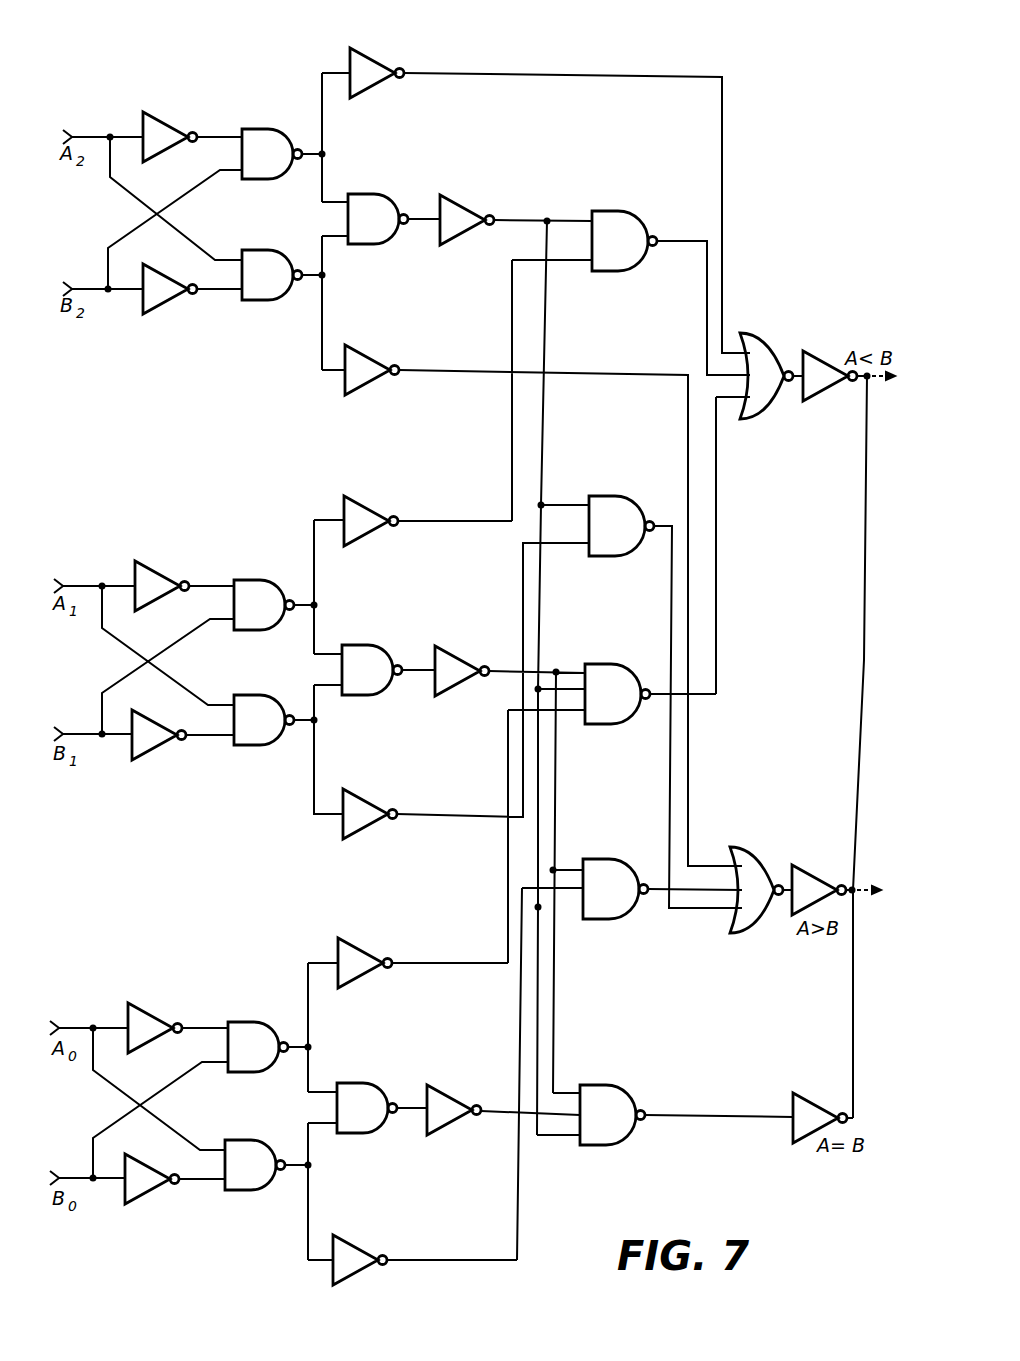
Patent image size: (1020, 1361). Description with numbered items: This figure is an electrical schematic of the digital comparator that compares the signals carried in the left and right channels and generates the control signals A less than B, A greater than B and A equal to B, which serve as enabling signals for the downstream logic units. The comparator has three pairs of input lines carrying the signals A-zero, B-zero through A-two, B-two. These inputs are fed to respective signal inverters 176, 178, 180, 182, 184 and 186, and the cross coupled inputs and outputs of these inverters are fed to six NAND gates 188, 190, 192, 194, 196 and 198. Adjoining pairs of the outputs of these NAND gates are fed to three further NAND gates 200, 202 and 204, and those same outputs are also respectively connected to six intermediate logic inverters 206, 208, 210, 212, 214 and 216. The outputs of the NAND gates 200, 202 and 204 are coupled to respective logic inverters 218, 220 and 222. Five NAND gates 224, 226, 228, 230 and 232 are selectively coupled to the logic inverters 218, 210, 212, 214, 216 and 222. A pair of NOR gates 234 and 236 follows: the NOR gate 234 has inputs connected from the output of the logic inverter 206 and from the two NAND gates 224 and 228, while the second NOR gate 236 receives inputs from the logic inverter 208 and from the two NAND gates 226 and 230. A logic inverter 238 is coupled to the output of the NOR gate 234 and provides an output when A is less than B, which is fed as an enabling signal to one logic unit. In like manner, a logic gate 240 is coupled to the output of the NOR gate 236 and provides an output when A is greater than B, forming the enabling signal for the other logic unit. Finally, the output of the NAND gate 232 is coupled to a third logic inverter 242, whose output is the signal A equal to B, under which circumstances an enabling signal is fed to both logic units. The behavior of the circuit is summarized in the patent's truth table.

The signal inverter 176 is at (142, 1205).
The signal inverter 178 is at (152, 1008).
The signal inverter 180 is at (141, 763).
The signal inverter 182 is at (158, 540).
The signal inverter 184 is at (155, 312).
The signal inverter 186 is at (157, 117).
The NAND gate 188 is at (253, 130).
The NAND gate 190 is at (252, 252).
The NAND gate 192 is at (245, 580).
The NAND gate 194 is at (240, 738).
The NAND gate 196 is at (250, 1022).
The NAND gate 198 is at (238, 1185).
The NAND gate 200 is at (370, 195).
The NAND gate 202 is at (365, 644).
The NAND gate 204 is at (350, 1083).
The intermediate logic inverter 206 is at (370, 50).
The intermediate logic inverter 208 is at (370, 350).
The intermediate logic inverter 210 is at (375, 500).
The intermediate logic inverter 212 is at (365, 830).
The intermediate logic inverter 214 is at (365, 940).
The intermediate logic inverter 216 is at (352, 1240).
The logic inverter 218 is at (455, 195).
The logic inverter 220 is at (450, 645).
The logic inverter 222 is at (445, 1088).
The NAND gate 224 is at (610, 212).
The NAND gate 226 is at (605, 495).
The NAND gate 228 is at (595, 664).
The NAND gate 230 is at (585, 860).
The NAND gate 232 is at (620, 1083).
The NOR gate 234 is at (752, 335).
The NOR gate 236 is at (740, 850).
The logic inverter 238 is at (806, 355).
The logic gate 240 is at (835, 840).
The third logic inverter 242 is at (830, 1058).